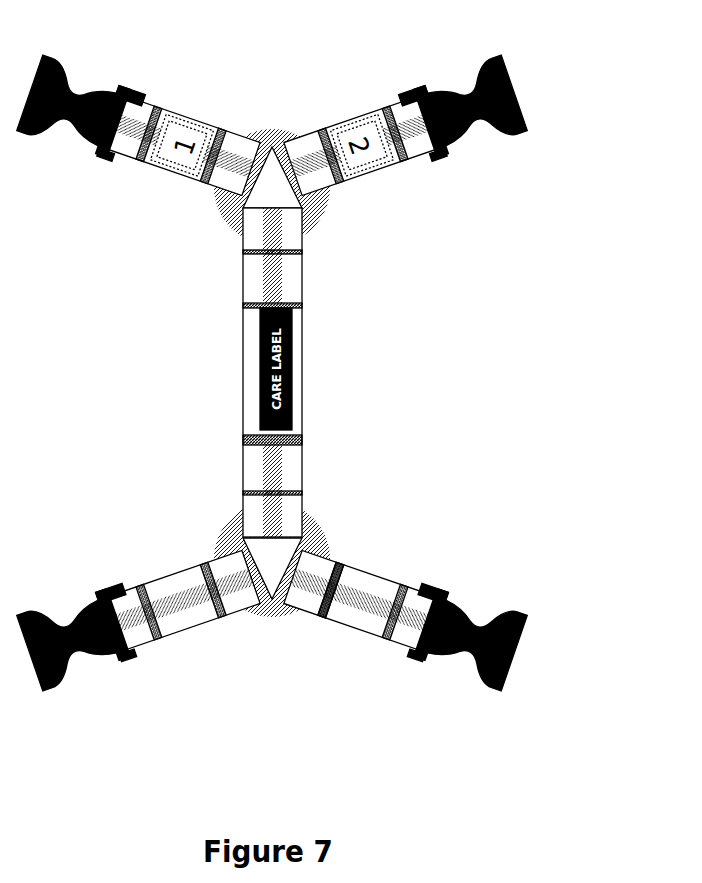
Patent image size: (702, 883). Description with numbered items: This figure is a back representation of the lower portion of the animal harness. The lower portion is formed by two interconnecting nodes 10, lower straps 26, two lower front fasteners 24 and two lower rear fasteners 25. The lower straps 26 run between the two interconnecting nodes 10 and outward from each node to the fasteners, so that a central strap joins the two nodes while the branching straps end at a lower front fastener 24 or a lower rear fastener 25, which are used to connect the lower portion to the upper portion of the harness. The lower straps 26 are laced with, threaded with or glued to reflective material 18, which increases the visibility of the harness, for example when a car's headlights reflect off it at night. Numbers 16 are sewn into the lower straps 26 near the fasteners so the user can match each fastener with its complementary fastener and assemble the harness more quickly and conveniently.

The interconnecting node 10 is at (317, 525).
The numbers 16 is at (365, 122).
The reflective material 18 is at (385, 598).
The lower front fastener 24 is at (40, 113).
The lower rear fastener 25 is at (60, 617).
The lower strap 26 is at (362, 570).